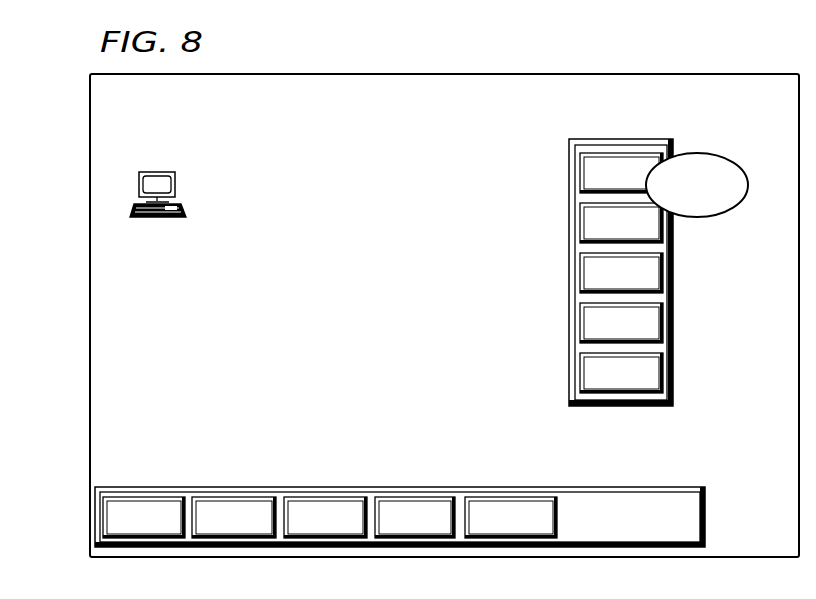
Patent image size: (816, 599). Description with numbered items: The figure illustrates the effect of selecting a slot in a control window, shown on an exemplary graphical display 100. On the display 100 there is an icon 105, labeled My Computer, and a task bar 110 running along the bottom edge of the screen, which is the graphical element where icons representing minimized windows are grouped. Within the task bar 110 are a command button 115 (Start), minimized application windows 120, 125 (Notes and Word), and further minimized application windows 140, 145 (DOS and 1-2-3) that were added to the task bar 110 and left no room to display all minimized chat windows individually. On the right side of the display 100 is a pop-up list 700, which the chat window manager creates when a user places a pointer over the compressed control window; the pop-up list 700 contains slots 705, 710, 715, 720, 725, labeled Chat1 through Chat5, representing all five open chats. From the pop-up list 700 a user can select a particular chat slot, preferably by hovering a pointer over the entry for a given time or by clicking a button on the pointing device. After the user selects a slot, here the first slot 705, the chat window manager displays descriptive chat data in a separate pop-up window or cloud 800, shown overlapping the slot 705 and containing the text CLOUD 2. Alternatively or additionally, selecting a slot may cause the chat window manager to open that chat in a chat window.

The graphical display 100 is at (360, 287).
The icon 105 is at (176, 188).
The task bar 110 is at (716, 522).
The command button 115 is at (147, 497).
The minimized application window 120 is at (235, 497).
The minimized application window 125 is at (327, 497).
The minimized application window 140 is at (425, 497).
The minimized application window 145 is at (512, 497).
The pop-up list 700 is at (680, 315).
The slot 705 is at (580, 167).
The slot 710 is at (580, 217).
The slot 715 is at (580, 270).
The slot 720 is at (580, 327).
The slot 725 is at (580, 377).
The cloud 800 is at (712, 154).